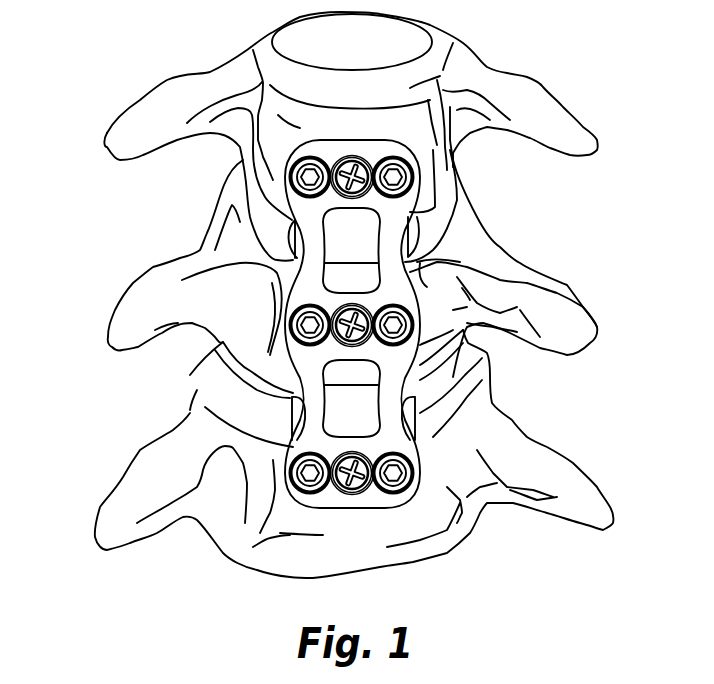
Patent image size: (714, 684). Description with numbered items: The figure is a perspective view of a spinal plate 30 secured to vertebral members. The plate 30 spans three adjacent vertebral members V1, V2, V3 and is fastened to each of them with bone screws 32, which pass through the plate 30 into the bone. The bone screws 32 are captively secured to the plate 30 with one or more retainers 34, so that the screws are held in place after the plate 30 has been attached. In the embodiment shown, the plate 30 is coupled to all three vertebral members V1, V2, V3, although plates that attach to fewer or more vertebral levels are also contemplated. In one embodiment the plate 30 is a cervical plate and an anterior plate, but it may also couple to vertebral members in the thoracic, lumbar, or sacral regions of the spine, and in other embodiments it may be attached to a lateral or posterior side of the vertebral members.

The vertebral member V1 is at (258, 108).
The vertebral member V2 is at (267, 317).
The vertebral member V3 is at (270, 472).
The plate 30 is at (307, 282).
The bone screw 32 is at (390, 174).
The retainer 34 is at (360, 305).